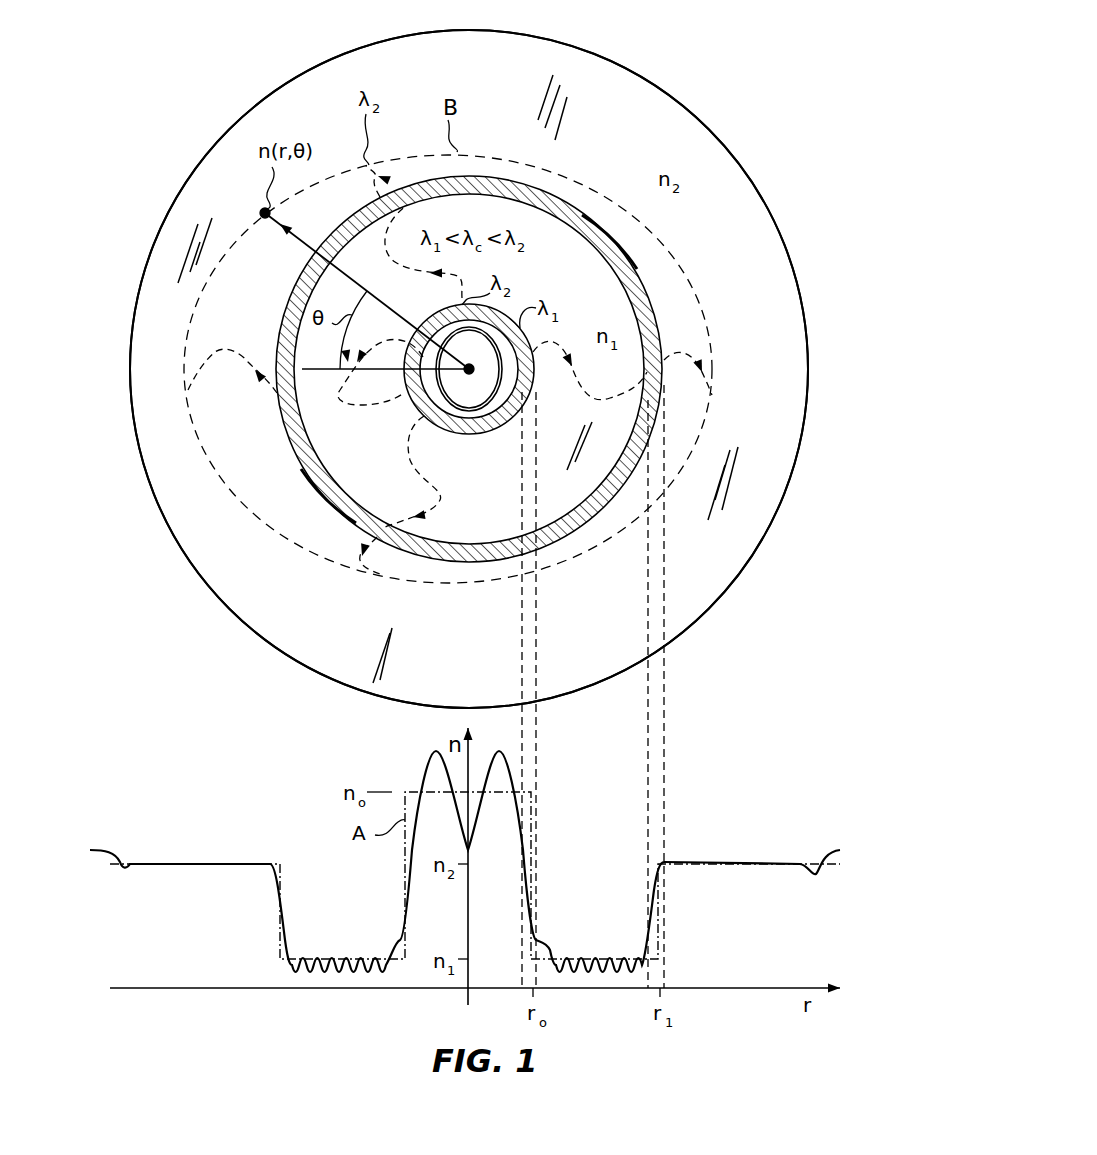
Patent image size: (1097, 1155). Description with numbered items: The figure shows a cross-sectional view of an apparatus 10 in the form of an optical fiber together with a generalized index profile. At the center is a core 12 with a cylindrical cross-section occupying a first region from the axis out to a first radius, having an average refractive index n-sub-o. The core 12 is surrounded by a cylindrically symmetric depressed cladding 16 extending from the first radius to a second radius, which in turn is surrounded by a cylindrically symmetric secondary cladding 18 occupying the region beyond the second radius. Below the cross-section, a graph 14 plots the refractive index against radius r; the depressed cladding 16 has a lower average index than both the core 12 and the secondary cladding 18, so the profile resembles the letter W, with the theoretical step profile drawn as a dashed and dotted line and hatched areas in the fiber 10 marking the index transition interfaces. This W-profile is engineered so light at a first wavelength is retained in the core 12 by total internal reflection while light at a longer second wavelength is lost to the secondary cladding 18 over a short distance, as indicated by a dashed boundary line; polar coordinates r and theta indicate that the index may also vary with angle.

The apparatus 10 is at (712, 78).
The core 12 is at (510, 427).
The graph 14 is at (430, 770).
The depressed cladding 16 is at (328, 440).
The secondary cladding 18 is at (242, 583).